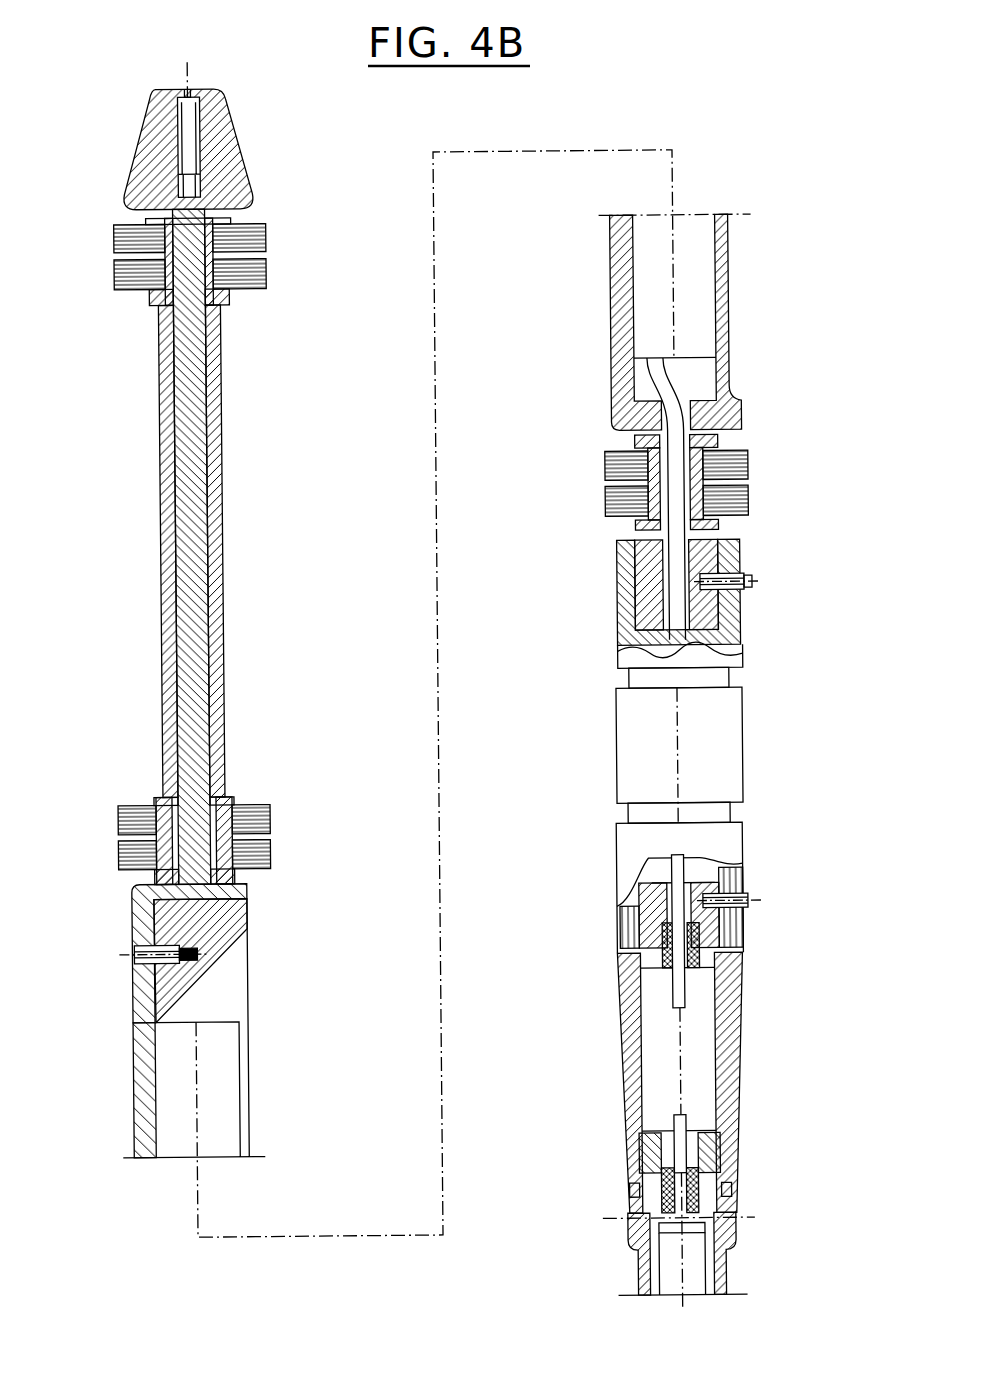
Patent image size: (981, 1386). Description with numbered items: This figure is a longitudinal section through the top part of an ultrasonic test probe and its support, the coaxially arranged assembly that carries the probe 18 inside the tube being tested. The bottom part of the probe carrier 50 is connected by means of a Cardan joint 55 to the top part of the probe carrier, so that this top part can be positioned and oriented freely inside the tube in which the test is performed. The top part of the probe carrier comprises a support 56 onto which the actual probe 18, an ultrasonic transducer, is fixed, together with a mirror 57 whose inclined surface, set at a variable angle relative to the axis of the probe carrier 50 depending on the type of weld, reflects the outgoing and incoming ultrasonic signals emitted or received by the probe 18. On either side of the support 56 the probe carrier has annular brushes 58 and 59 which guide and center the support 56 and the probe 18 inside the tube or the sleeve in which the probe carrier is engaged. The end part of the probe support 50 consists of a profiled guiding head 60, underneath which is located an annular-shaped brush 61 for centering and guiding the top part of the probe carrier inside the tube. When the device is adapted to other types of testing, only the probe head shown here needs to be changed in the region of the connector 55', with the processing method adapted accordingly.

The probe 18 is at (177, 1076).
The probe carrier 50 is at (743, 891).
The Cardan joint 55 is at (730, 744).
The connector 55' is at (725, 1123).
The support 56 is at (730, 412).
The mirror 57 is at (168, 915).
The annular brush 58 is at (748, 497).
The annular brush 59 is at (114, 800).
The profiled guiding head 60 is at (152, 148).
The annular-shaped brush 61 is at (118, 280).